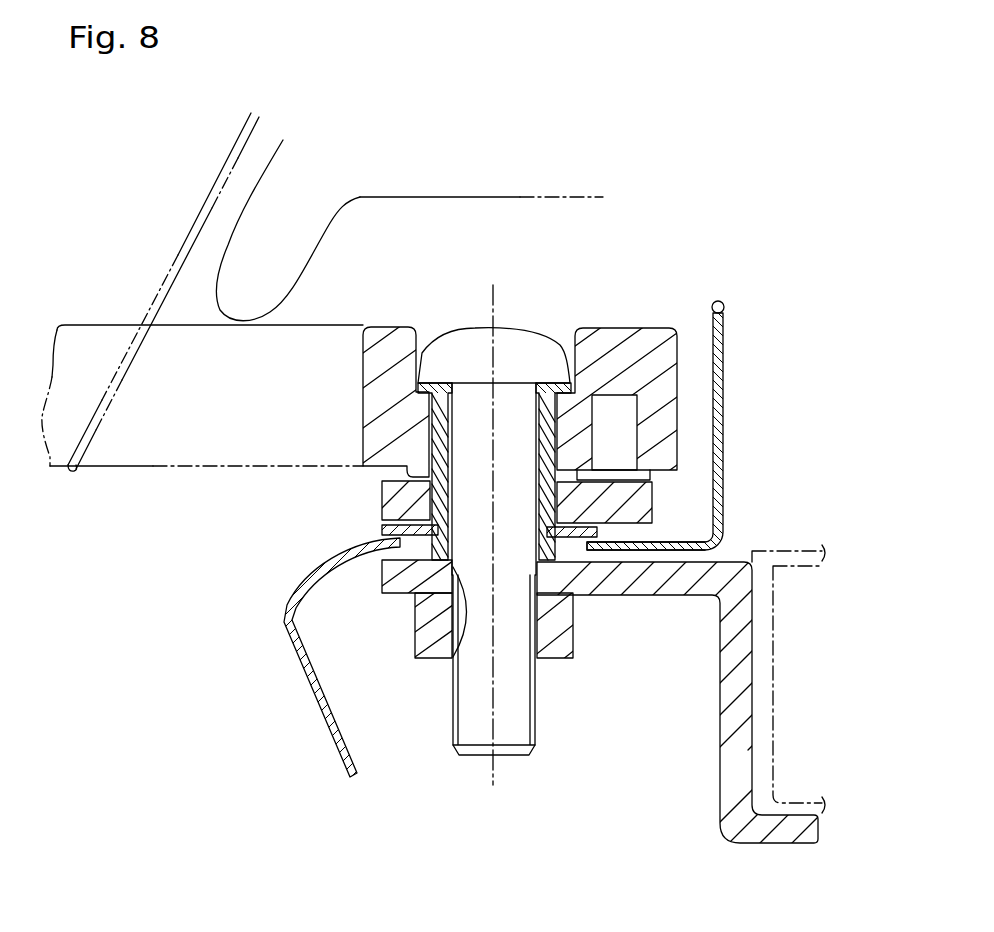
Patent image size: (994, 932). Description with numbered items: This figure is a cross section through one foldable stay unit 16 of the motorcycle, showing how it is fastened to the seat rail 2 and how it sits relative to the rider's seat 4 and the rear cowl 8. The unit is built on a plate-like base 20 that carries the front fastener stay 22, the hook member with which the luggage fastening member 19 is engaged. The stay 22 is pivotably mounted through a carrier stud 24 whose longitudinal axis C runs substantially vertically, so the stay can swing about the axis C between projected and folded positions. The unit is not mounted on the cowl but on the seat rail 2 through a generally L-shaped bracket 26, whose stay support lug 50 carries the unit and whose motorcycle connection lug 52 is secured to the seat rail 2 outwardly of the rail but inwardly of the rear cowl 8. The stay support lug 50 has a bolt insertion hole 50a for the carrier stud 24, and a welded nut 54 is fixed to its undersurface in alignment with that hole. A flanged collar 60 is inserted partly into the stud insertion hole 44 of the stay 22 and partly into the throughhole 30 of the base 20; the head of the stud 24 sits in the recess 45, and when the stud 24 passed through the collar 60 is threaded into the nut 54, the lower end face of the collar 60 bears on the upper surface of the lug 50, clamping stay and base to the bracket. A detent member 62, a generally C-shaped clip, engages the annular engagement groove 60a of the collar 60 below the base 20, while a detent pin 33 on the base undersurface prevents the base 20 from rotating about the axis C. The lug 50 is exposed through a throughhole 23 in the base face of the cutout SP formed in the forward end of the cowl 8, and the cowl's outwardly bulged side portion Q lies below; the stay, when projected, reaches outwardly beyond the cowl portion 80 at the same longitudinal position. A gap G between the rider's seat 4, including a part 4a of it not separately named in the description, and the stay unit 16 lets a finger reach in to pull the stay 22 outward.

The seat rail 2 is at (781, 548).
The rider's seat 4 is at (522, 197).
The door panel flange 4a is at (243, 308).
The rear cowl 8 is at (325, 728).
The foldable stay unit 16 is at (672, 322).
The luggage fastening member 19 is at (125, 325).
The base 20 is at (648, 505).
The front fastener stay 22 is at (392, 338).
The throughhole 23 is at (420, 514).
The carrier stud 24 is at (467, 338).
The bracket 26 is at (660, 557).
The throughhole 30 is at (560, 453).
The detent pin 33 is at (568, 557).
The stud insertion hole 44 is at (540, 405).
The recess 45 is at (574, 330).
The stay support lug 50 is at (668, 590).
The bolt insertion hole 50a is at (453, 657).
The motorcycle connection lug 52 is at (728, 735).
The welded nut 54 is at (573, 635).
The flanged collar 60 is at (541, 407).
The annular engagement groove 60a is at (433, 537).
The detent member 62 is at (417, 533).
The portion of the rear cowl 80 is at (313, 572).
The gap G is at (230, 315).
The cutout SP is at (684, 455).
The outwardly bulged side portion Q is at (286, 624).
The pivot axis C is at (493, 763).